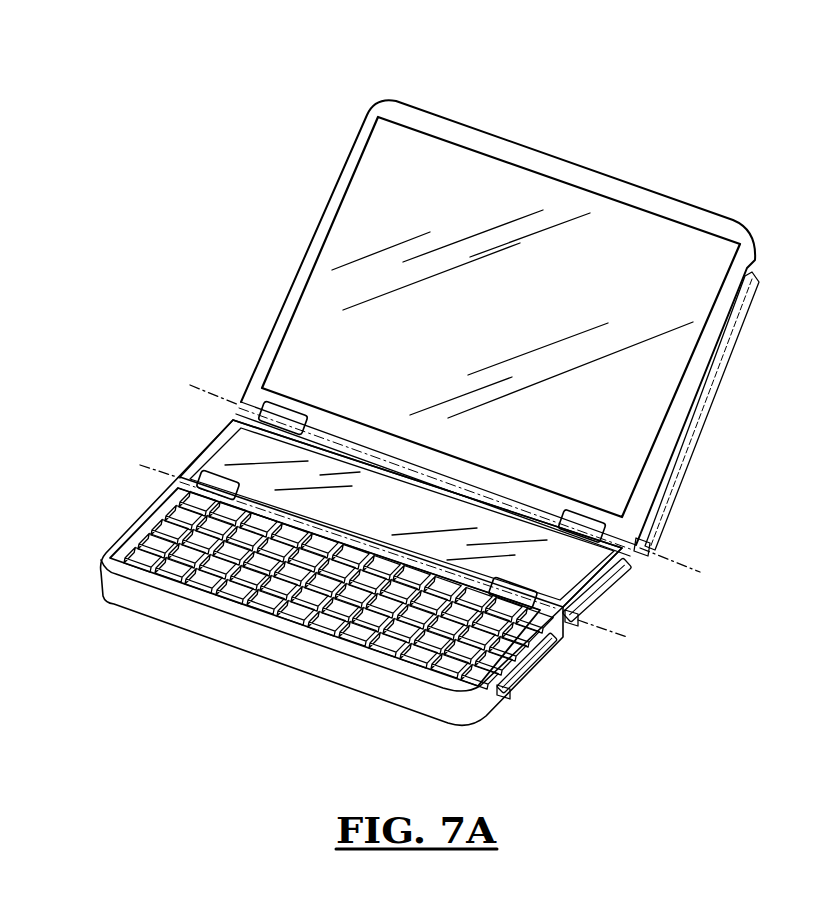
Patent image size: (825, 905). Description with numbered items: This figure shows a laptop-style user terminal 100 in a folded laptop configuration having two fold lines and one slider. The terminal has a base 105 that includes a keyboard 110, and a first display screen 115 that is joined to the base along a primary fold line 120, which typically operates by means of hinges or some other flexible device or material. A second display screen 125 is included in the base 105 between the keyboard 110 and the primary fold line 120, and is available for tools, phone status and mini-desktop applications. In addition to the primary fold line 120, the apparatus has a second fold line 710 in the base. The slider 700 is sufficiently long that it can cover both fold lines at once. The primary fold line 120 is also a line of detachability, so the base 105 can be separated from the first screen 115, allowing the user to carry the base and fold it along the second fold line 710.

The user terminal 100 is at (230, 140).
The base 105 is at (215, 442).
The keyboard 110 is at (148, 528).
The first display screen 115 is at (491, 322).
The primary fold line 120 is at (688, 565).
The second display screen 125 is at (394, 521).
The slider 700 is at (708, 412).
The second fold line 710 is at (618, 630).